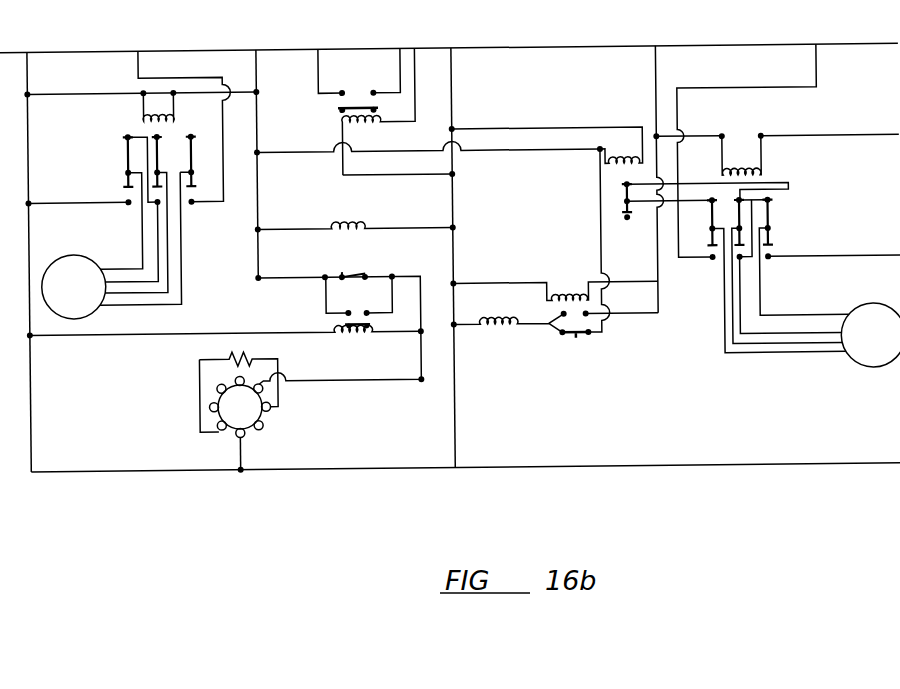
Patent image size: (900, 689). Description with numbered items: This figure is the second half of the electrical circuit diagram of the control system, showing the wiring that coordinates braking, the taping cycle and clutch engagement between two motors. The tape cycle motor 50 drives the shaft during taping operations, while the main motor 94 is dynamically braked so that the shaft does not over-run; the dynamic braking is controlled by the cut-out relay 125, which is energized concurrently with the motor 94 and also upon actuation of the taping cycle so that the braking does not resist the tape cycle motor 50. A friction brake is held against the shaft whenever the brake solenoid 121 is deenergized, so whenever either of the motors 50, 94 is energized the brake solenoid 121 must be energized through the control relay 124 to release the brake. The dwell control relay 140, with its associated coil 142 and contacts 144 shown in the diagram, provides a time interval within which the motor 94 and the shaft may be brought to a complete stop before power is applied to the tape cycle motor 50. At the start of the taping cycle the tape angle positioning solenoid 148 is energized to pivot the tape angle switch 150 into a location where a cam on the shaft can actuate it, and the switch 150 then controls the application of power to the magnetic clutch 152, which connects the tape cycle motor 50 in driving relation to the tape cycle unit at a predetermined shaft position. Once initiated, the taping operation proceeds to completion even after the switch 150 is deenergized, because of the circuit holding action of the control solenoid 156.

The tape cycle motor 50 is at (86, 290).
The motor 94 is at (886, 347).
The brake solenoid 121 is at (509, 316).
The control relay 124 is at (555, 305).
The cut-out relay 125 is at (620, 173).
The dwell control relay 140 is at (326, 100).
The relay coil 142 is at (396, 111).
The relay contacts 144 is at (359, 73).
The tape angle positioning solenoid 148 is at (355, 217).
The tape angle switch 150 is at (339, 316).
The magnetic clutch 152 is at (239, 401).
The control solenoid 156 is at (225, 318).